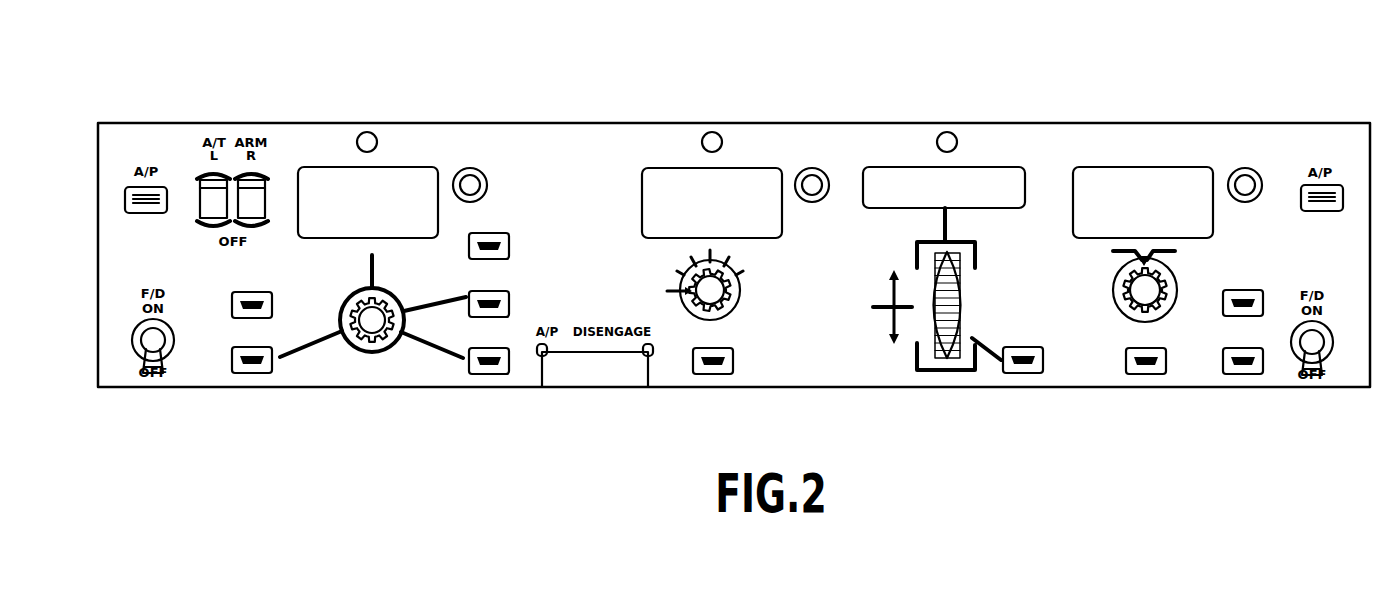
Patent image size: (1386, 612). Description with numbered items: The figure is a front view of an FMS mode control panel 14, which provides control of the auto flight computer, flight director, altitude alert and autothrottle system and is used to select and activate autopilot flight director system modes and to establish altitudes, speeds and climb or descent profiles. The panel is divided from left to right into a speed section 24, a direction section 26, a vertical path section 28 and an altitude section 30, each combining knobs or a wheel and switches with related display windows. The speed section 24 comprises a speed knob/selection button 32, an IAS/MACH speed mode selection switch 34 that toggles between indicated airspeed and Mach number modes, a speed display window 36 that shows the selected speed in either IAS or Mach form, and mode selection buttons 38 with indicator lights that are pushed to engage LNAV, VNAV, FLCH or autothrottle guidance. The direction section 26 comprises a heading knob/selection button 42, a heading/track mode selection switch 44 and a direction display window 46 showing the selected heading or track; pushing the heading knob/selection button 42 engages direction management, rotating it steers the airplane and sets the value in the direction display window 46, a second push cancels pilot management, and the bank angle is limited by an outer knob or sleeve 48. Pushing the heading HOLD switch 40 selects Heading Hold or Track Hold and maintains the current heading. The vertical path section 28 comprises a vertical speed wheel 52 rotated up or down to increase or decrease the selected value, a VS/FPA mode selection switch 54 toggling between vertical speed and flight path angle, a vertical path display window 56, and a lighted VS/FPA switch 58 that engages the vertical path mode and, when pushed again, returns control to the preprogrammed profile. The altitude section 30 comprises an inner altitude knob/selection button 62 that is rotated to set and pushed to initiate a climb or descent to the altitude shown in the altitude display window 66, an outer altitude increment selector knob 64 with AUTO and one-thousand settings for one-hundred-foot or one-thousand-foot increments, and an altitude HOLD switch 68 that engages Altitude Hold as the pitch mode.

The FMS mode control panel 14 is at (185, 122).
The speed section 24 is at (378, 92).
The direction section 26 is at (730, 70).
The vertical path section 28 is at (985, 88).
The altitude section 30 is at (1182, 91).
The speed knob/selection button 32 is at (360, 344).
The IAS/MACH speed mode selection switch 34 is at (357, 132).
The speed display window 36 is at (438, 167).
The mode selection buttons 38 is at (245, 373).
The heading HOLD switch 40 is at (718, 375).
The heading knob/selection button 42 is at (730, 306).
The heading/track mode selection switch 44 is at (722, 130).
The direction display window 46 is at (642, 168).
The outer knob or sleeve 48 is at (693, 312).
The vertical speed wheel 52 is at (972, 303).
The VS/FPA mode selection switch 54 is at (937, 132).
The vertical path display window 56 is at (1025, 167).
The VS/FPA switch 58 is at (1030, 373).
The inner altitude knob/selection button 62 is at (1162, 305).
The outer altitude increment selector knob 64 is at (1120, 310).
The altitude display window 66 is at (1213, 167).
The altitude HOLD switch 68 is at (1150, 373).